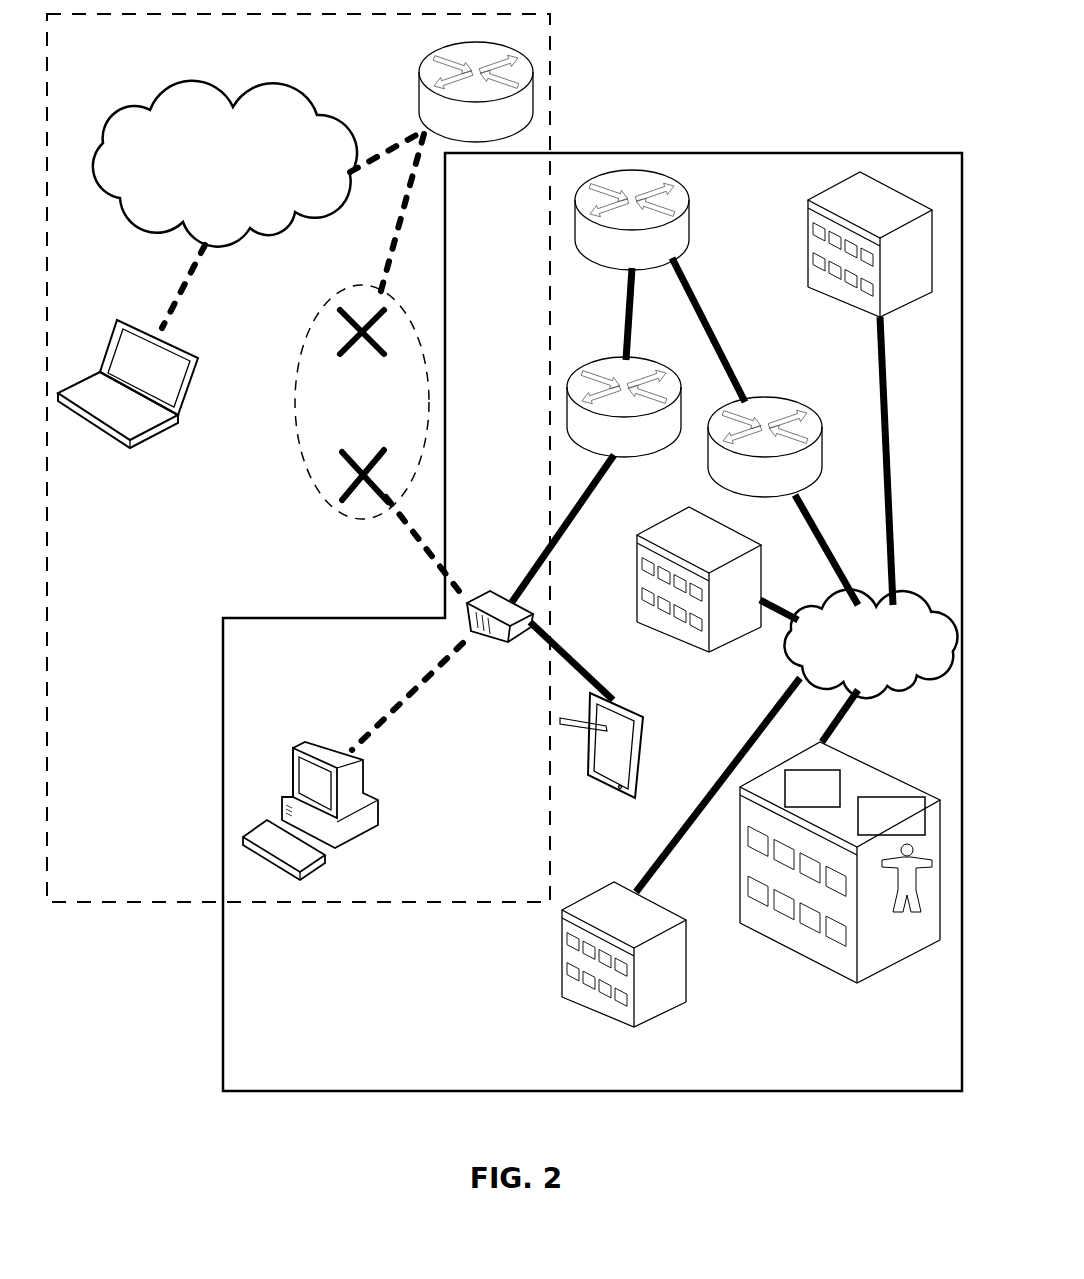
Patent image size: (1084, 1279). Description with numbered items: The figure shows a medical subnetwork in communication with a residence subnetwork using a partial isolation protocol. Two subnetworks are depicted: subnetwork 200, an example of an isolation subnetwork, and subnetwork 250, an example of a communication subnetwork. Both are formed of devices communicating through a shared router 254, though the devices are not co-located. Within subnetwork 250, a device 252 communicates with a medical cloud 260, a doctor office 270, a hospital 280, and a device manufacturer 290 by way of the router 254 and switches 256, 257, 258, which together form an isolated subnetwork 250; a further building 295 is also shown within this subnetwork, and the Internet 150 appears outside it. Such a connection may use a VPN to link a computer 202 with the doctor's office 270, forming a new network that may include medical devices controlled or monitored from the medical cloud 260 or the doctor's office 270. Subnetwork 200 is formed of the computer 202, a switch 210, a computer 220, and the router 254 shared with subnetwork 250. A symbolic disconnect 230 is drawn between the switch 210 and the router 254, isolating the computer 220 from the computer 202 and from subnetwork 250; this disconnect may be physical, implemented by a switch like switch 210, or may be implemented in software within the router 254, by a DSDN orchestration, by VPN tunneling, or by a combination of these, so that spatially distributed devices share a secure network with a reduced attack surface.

The Internet 150 is at (225, 164).
The subnetwork 200 is at (202, 902).
The computer 202 is at (310, 821).
The switch 210 is at (445, 91).
The computer 220 is at (128, 392).
The symbolic disconnect 230 is at (362, 402).
The subnetwork 250 is at (268, 1091).
The device 252 is at (601, 761).
The router 254 is at (508, 646).
The switch 256 is at (632, 434).
The switch 257 is at (663, 220).
The switch 258 is at (777, 428).
The medical cloud 260 is at (870, 644).
The doctor office 270 is at (840, 878).
The hospital 280 is at (699, 596).
The device manufacturer 290 is at (621, 973).
The building 295 is at (870, 244).